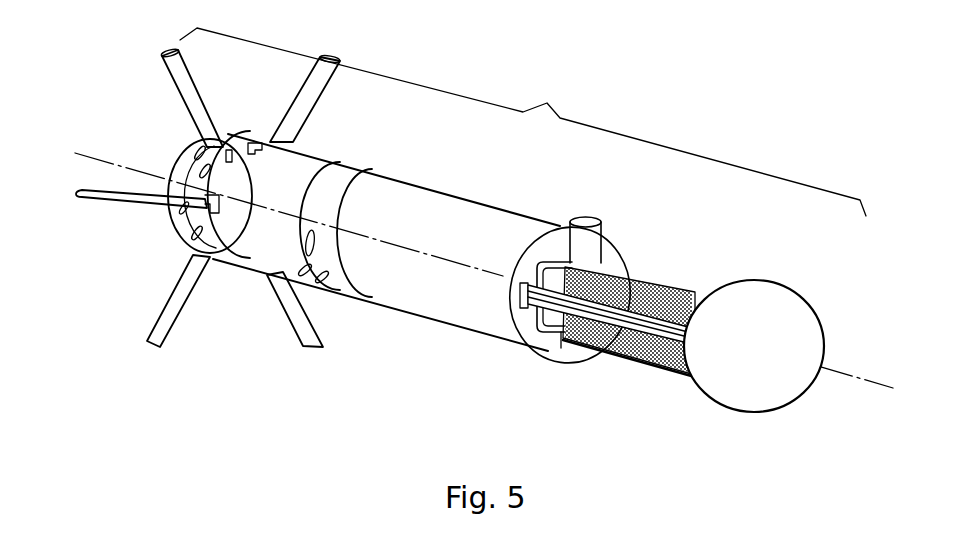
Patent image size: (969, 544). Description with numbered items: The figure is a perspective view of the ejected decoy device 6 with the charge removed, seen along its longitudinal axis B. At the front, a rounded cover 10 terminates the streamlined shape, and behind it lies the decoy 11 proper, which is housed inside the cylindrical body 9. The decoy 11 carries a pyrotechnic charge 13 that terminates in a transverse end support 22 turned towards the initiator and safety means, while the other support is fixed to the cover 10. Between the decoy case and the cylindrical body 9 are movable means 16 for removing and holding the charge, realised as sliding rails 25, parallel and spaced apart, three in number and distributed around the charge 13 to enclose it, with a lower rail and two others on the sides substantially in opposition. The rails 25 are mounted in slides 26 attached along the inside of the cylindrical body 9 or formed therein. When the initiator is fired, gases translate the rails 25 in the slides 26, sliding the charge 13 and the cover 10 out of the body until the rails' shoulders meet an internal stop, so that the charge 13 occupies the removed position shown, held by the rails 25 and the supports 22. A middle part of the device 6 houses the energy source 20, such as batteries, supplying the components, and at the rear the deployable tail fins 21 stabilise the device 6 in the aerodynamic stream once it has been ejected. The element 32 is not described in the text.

The decoy device 6 is at (523, 122).
The cylindrical body 9 is at (443, 302).
The rounded cover 10 is at (783, 408).
The decoy 11 is at (652, 260).
The charge 13 is at (672, 290).
The movable means for removing and holding the charge 16 is at (597, 358).
The energy source 20 is at (278, 258).
The deployable tail fins 21 is at (168, 300).
The transverse end support 22 is at (545, 262).
The sliding rails 25 is at (630, 333).
The slides 26 is at (513, 308).
The post 32 is at (588, 217).
The longitudinal axis B is at (878, 380).